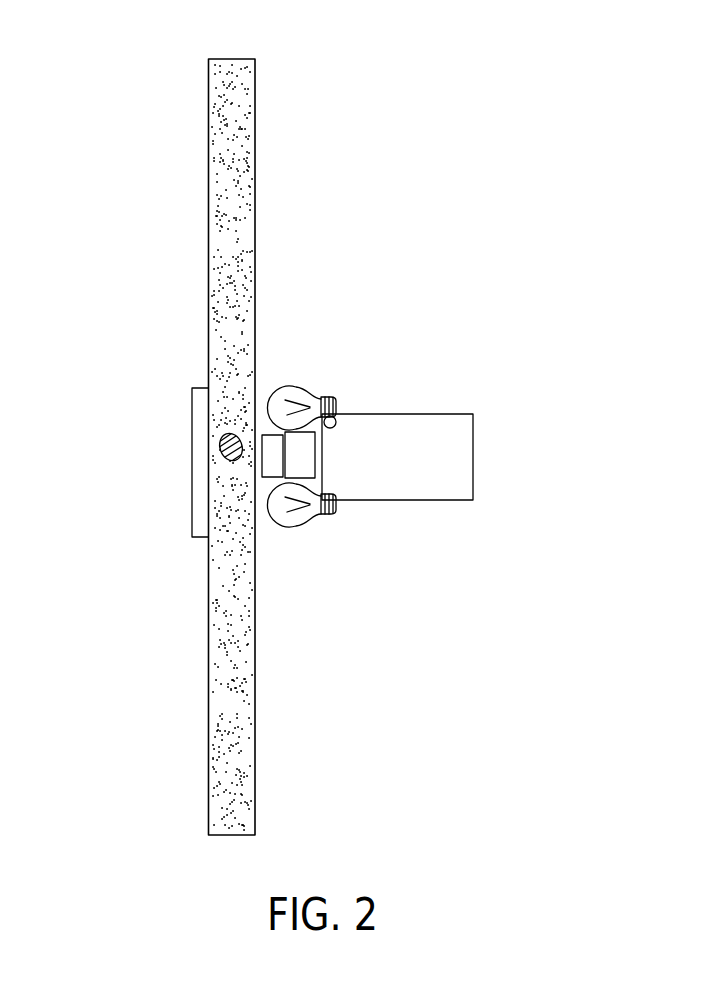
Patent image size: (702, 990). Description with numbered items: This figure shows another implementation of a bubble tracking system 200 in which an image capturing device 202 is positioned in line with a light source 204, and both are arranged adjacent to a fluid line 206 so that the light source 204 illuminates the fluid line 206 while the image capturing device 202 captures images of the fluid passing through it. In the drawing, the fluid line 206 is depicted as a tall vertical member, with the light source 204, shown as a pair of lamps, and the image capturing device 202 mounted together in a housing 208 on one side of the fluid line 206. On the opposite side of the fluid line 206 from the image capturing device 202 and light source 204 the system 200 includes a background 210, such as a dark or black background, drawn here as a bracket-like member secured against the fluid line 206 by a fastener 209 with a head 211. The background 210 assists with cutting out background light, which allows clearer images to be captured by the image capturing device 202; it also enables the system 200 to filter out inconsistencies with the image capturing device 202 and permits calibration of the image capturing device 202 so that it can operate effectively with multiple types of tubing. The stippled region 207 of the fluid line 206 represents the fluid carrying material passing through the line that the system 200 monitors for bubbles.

The system 200 is at (126, 38).
The image capturing device 202 is at (302, 460).
The light source 204 is at (291, 385).
The fluid line 206 is at (255, 258).
The wall material 207 is at (228, 688).
The housing 208 is at (473, 467).
The fastener 209 is at (221, 441).
The background 210 is at (192, 505).
The fastener head 211 is at (223, 458).